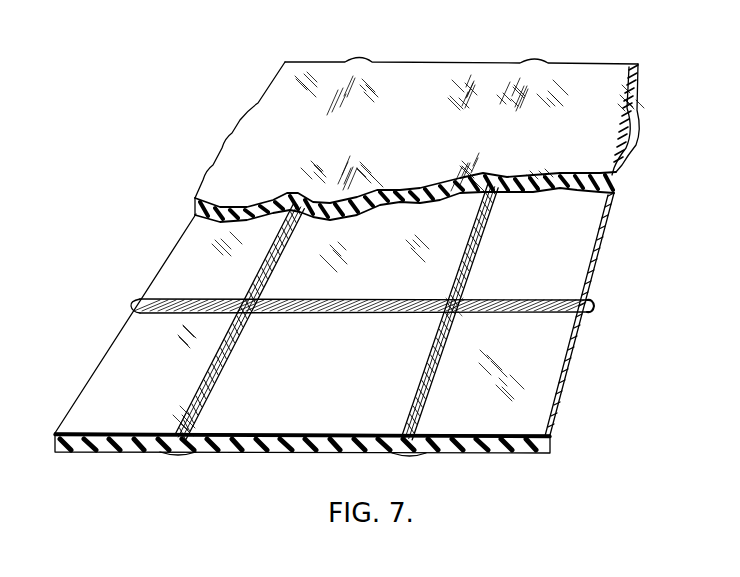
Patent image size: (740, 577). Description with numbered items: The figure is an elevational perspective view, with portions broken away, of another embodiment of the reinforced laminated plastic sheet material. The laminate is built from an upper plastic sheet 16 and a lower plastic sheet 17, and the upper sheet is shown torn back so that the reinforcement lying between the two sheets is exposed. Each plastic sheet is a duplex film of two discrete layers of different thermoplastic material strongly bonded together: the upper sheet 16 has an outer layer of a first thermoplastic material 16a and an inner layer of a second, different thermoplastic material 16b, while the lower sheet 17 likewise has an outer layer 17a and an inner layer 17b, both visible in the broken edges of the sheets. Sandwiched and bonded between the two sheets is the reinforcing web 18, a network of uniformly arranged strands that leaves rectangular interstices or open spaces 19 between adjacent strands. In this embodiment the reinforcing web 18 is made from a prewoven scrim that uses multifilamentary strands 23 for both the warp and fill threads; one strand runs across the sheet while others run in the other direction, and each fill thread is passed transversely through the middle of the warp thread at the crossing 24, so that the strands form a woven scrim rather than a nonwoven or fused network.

The upper plastic sheet 16 is at (451, 82).
The outer layer of first thermoplastic material 16a is at (613, 178).
The inner layer of second thermoplastic material 16b is at (611, 197).
The lower plastic sheet 17 is at (190, 262).
The outer layer of lower sheet 17a is at (535, 448).
The inner layer of lower sheet 17b is at (587, 244).
The reinforcing web 18 is at (239, 310).
The interstices 19 is at (303, 440).
The multifilamentary strands 23 is at (213, 368).
The woven crossing of warp and fill threads 24 is at (462, 301).